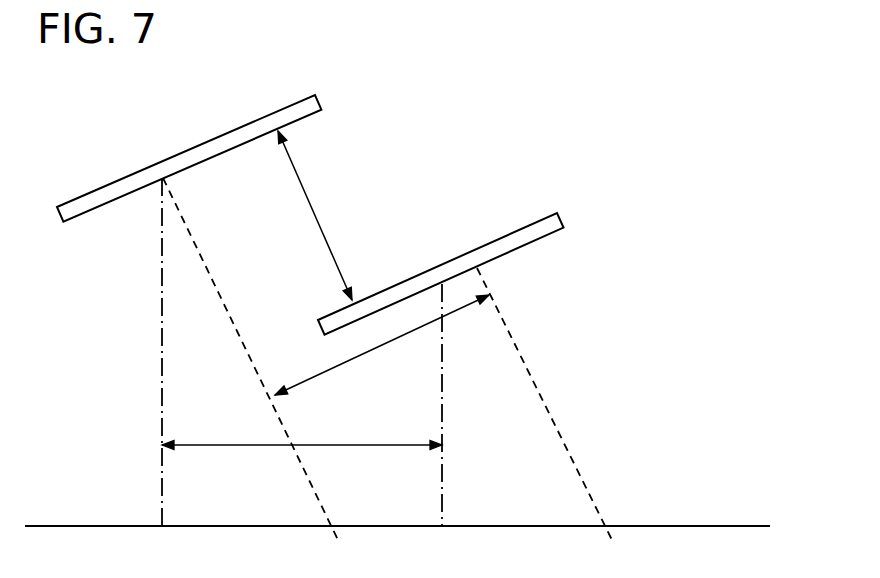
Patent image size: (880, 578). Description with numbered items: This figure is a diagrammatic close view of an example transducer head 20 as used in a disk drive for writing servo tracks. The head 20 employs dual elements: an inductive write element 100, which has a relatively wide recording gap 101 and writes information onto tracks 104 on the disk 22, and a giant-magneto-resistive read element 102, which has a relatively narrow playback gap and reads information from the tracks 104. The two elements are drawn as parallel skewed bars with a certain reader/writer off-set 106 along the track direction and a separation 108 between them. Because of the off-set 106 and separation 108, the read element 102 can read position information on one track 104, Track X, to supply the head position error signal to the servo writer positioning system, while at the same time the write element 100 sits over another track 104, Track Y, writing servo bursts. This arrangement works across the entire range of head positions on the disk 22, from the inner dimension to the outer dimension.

The head 20 is at (461, 110).
The disk 22 is at (527, 525).
The write element 100 is at (237, 128).
The recording gap 101 is at (261, 448).
The read element 102 is at (510, 232).
The tracks 104 is at (160, 480).
The reader/writer off-set 106 is at (387, 343).
The separation 108 is at (360, 190).